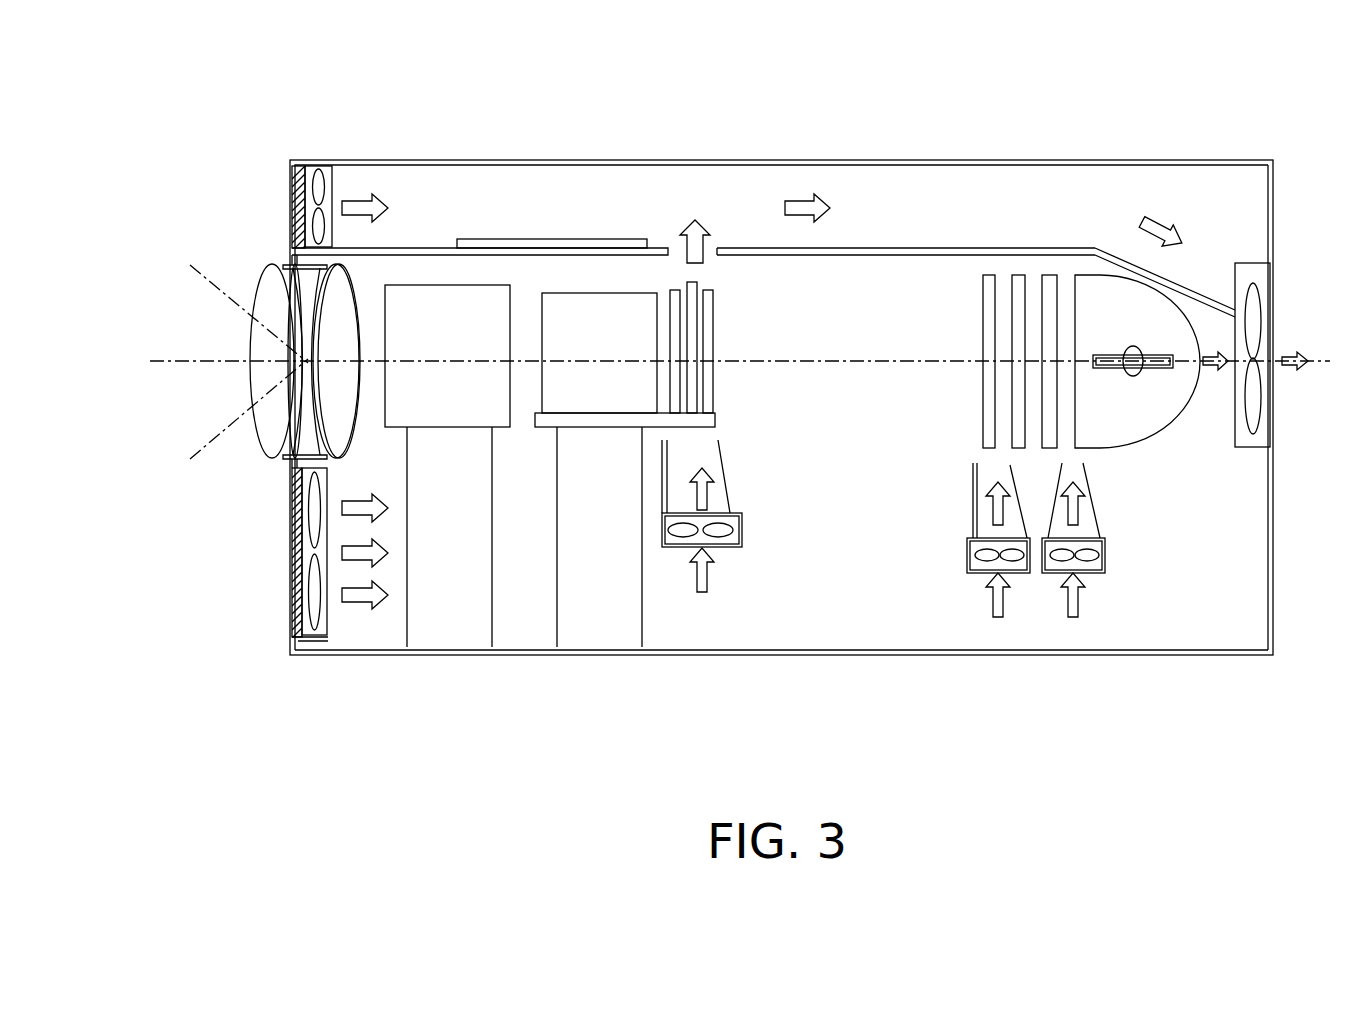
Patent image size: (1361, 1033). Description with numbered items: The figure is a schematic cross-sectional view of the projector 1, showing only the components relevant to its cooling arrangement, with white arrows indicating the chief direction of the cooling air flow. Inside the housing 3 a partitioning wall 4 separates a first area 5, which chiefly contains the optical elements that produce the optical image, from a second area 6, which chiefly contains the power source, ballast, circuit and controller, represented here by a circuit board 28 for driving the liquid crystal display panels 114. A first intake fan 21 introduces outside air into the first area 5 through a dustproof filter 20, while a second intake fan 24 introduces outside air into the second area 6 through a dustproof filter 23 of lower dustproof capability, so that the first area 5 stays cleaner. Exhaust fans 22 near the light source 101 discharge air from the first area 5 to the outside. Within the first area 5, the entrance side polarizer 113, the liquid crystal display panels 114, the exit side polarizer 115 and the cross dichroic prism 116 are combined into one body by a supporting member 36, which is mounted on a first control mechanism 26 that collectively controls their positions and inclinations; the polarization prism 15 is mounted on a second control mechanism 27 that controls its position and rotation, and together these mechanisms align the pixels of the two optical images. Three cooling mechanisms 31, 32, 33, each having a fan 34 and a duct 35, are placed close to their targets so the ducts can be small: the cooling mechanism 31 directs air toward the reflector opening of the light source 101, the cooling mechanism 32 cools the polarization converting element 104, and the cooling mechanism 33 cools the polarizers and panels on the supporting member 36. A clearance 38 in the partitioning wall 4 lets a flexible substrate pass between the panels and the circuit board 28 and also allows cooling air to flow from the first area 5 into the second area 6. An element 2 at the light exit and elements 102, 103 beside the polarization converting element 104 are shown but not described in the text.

The projector 1 is at (1184, 112).
The projection lens 2 is at (262, 254).
The housing 3 is at (1272, 577).
The partitioning wall 4 is at (1187, 278).
The first area 5 is at (1262, 623).
The second area 6 is at (1253, 187).
The polarization prism 15 is at (418, 293).
The dustproof filter 20 is at (292, 610).
The first intake fan 21 is at (317, 637).
The exhaust fans 22 is at (1263, 268).
The dustproof filter 23 is at (290, 202).
The second intake fan 24 is at (325, 172).
The first control mechanism 26 is at (607, 633).
The second control mechanism 27 is at (445, 633).
The circuit board 28 is at (512, 245).
The cooling mechanism 31 is at (1115, 537).
The cooling mechanism 32 is at (958, 538).
The cooling mechanism 33 is at (756, 519).
The fan 34 is at (732, 547).
The duct 35 is at (725, 473).
The supporting member 36 is at (715, 420).
The clearance 38 is at (718, 237).
The light source 101 is at (1142, 425).
The optical plate 102 is at (1050, 275).
The optical plate 103 is at (1020, 275).
The polarization converting element 104 is at (989, 275).
The entrance side polarizer 113 is at (708, 290).
The liquid crystal display panels 114 is at (690, 283).
The exit side polarizer 115 is at (672, 290).
The cross dichroic prism 116 is at (587, 297).